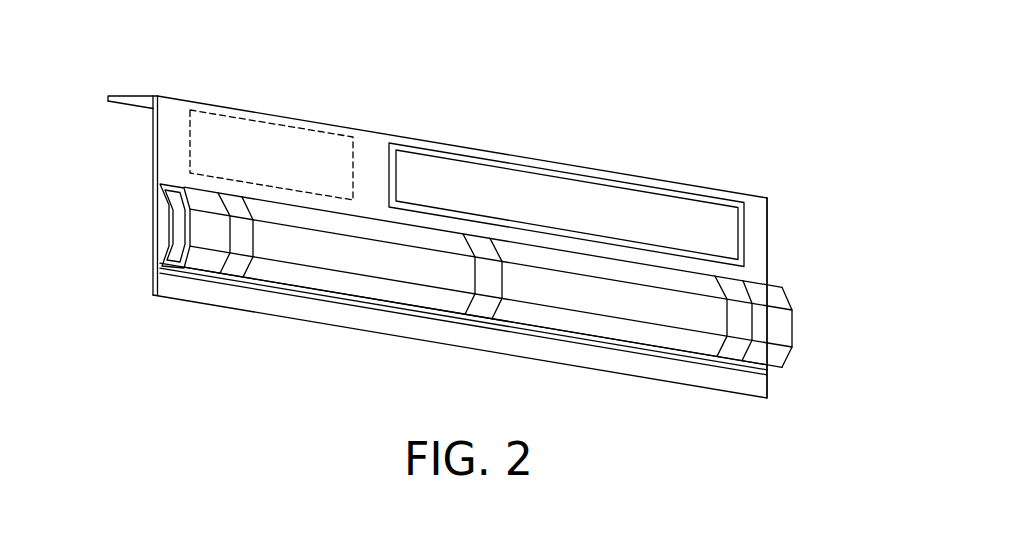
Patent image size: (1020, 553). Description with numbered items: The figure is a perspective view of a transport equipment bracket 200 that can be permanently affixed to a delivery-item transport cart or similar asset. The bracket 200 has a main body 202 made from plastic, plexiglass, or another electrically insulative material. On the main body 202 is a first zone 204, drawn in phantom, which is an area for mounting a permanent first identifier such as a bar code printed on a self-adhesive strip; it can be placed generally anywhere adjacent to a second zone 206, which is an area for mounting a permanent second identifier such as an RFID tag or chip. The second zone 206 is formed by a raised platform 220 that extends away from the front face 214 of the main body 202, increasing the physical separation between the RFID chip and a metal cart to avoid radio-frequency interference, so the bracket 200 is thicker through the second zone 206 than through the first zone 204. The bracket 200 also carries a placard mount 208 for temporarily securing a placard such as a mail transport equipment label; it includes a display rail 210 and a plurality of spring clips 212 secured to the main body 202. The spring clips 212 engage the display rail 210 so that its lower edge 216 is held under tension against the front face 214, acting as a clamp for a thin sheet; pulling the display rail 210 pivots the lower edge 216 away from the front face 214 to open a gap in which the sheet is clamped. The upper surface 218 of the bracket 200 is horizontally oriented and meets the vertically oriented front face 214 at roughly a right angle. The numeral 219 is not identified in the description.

The transport equipment bracket 200 is at (225, 58).
The main body 202 is at (613, 177).
The first zone 204 is at (289, 137).
The second zone 206 is at (474, 172).
The placard mount 208 is at (140, 223).
The display rail 210 is at (296, 276).
The spring clips 212 is at (234, 280).
The front face 214 is at (370, 156).
The lower edge 216 is at (159, 274).
The upper surface 218 is at (117, 90).
The flange underside 219 is at (137, 107).
The raised platform 220 is at (745, 242).